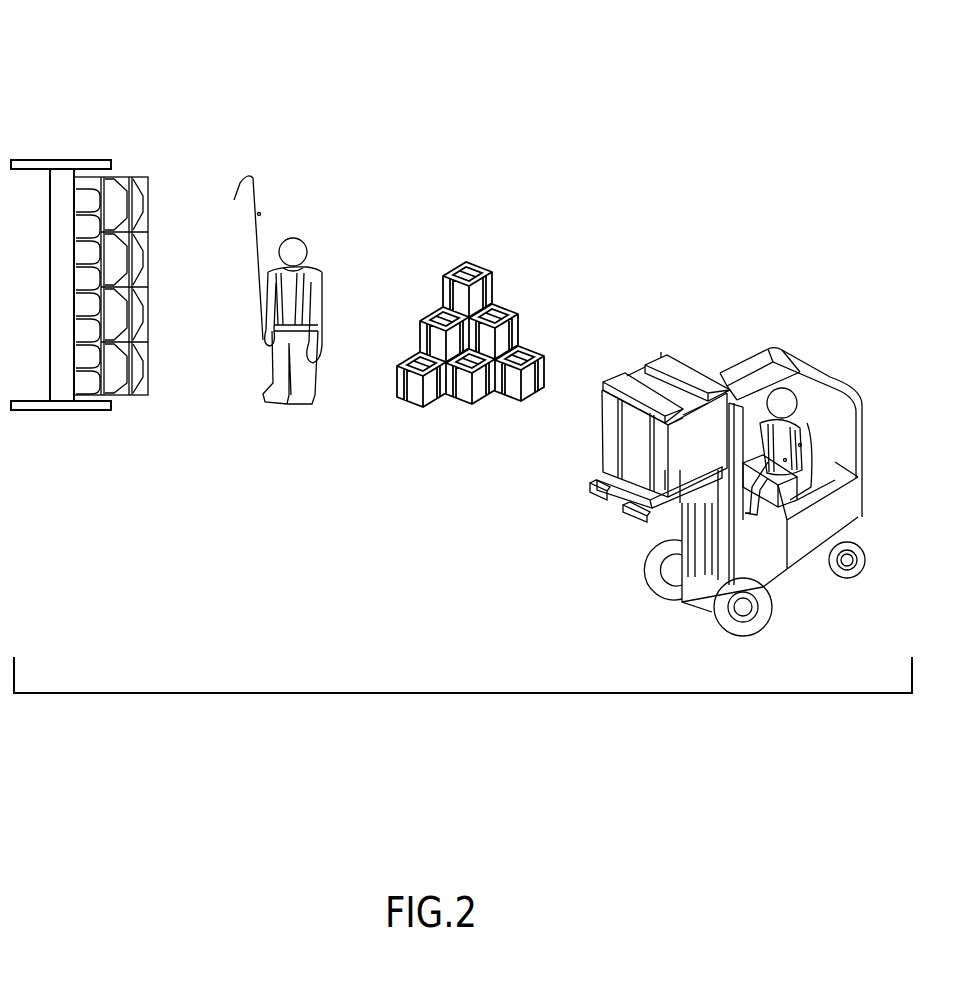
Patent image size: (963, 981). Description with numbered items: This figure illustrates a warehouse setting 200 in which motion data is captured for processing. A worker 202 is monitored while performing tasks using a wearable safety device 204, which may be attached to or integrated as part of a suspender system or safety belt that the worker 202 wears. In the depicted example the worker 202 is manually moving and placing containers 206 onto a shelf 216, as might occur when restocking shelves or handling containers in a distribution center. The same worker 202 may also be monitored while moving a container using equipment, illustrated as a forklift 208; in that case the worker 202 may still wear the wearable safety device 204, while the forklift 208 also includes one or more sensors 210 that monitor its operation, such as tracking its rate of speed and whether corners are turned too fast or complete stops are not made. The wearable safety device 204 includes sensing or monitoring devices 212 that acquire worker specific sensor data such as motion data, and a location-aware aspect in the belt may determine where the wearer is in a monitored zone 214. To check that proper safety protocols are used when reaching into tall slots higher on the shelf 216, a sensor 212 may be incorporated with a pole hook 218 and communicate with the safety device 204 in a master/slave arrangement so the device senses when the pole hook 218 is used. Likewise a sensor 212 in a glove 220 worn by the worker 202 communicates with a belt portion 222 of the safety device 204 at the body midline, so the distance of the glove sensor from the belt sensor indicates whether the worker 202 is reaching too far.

The warehouse setting 200 is at (558, 66).
The worker 202 is at (577, 322).
The wearable safety device 204 is at (306, 275).
The containers 206 is at (517, 272).
The forklift 208 is at (800, 572).
The sensors 210 is at (652, 518).
The sensing or monitoring devices 212 is at (259, 214).
The monitored zone 214 is at (83, 694).
The shelf 216 is at (115, 146).
The pole hook 218 is at (240, 183).
The glove 220 is at (322, 353).
The belt portion 222 is at (268, 340).